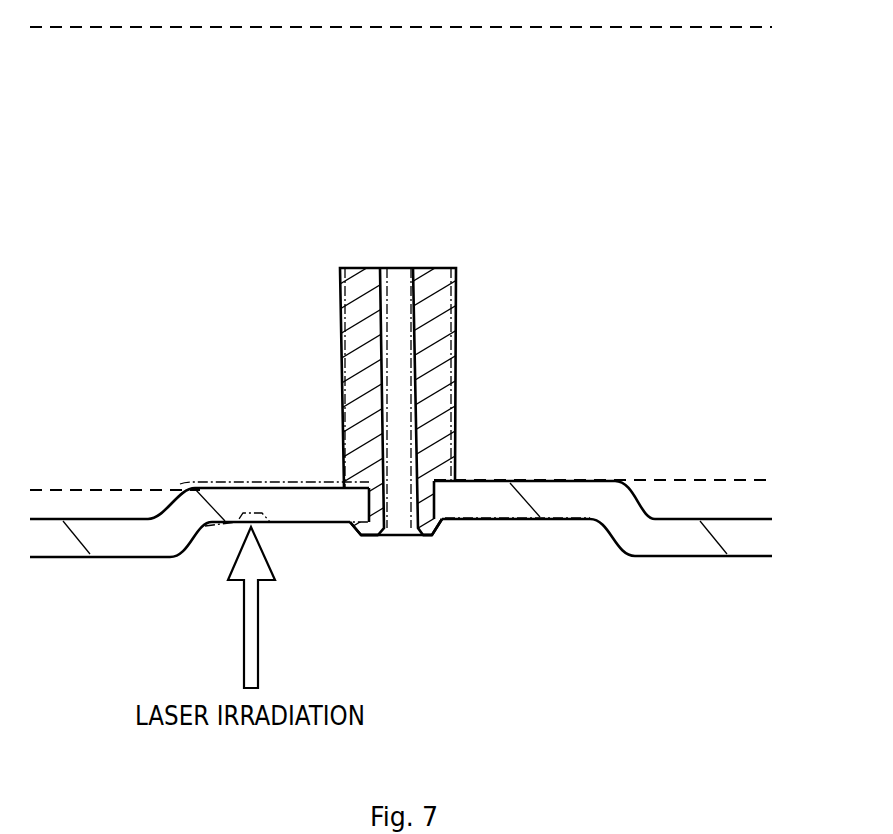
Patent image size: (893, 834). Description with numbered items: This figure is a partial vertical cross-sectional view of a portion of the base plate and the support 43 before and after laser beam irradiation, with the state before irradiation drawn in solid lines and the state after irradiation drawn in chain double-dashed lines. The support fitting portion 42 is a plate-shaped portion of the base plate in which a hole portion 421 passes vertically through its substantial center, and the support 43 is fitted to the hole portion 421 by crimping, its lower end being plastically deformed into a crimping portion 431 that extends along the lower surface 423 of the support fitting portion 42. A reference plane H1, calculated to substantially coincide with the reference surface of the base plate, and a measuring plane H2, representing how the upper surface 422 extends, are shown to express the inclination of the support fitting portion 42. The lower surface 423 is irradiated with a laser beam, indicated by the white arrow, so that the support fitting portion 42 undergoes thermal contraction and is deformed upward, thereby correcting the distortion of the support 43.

The reference plane H1 is at (602, 28).
The measuring plane H2 is at (690, 478).
The support fitting portion 42 is at (560, 538).
The hole portion 421 is at (400, 512).
The upper surface 422 is at (543, 478).
The lower surface 423 is at (502, 521).
The support 43 is at (436, 298).
The crimping portion 431 is at (437, 531).